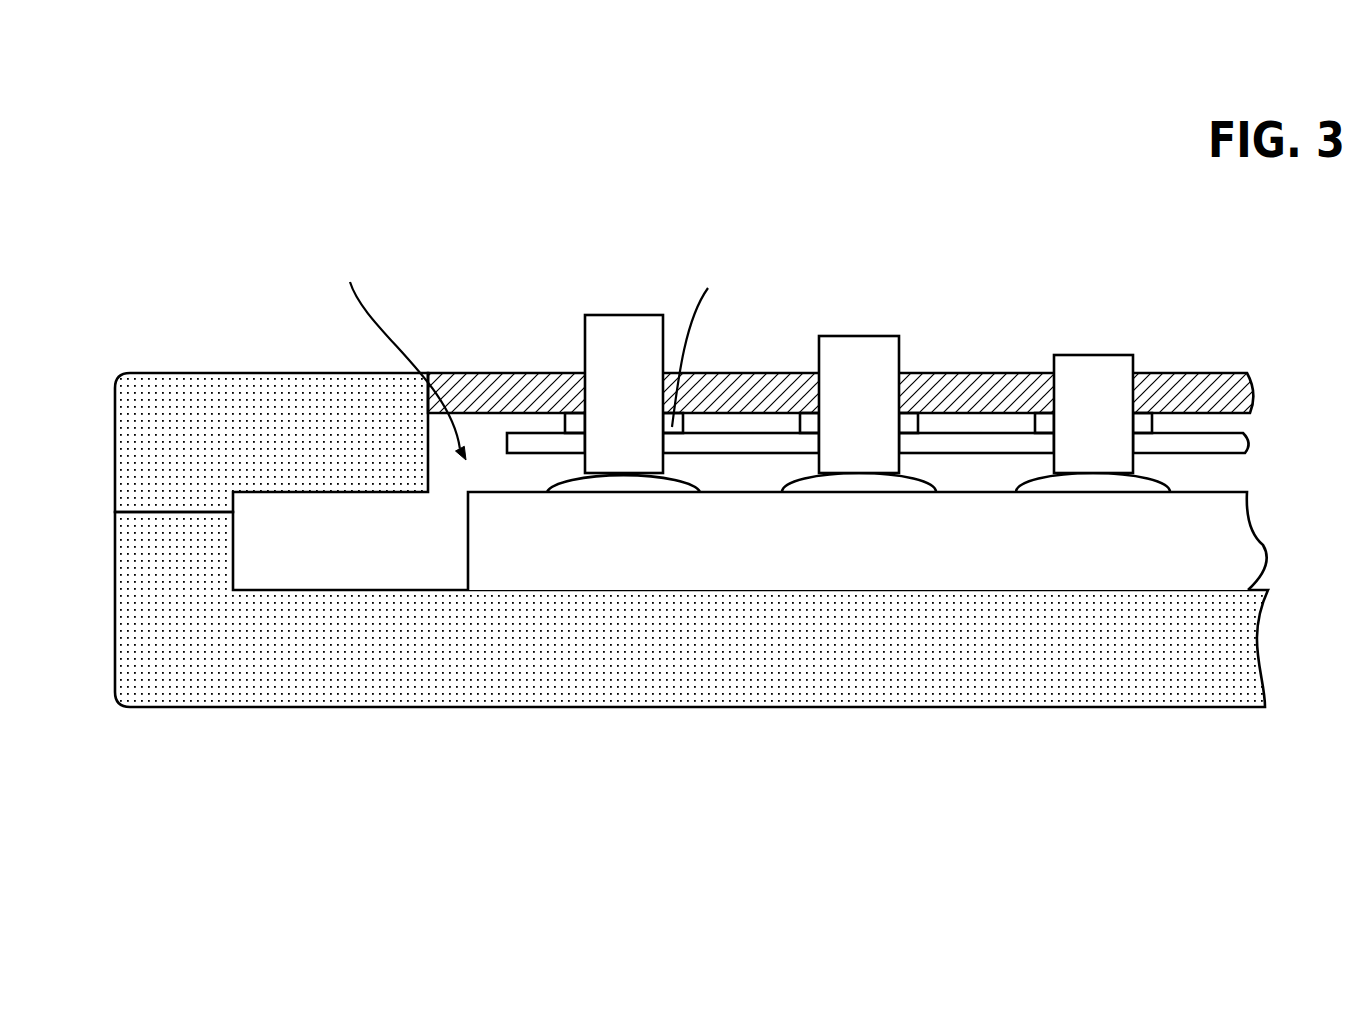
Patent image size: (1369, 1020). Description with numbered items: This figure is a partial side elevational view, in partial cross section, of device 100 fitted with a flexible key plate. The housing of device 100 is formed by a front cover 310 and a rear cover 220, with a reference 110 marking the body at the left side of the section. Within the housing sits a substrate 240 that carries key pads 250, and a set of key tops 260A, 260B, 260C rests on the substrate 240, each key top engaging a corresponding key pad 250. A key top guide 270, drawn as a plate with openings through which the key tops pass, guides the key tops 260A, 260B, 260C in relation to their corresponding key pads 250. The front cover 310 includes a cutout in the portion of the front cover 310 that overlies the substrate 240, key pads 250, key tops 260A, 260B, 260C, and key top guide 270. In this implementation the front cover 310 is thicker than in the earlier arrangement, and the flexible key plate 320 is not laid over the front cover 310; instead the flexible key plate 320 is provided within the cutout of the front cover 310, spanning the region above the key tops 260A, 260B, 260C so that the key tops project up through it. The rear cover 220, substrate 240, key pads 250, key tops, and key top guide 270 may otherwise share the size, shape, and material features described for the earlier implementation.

The device 100 is at (222, 117).
The housing 110 is at (115, 543).
The rear cover 220 is at (1102, 677).
The substrate 240 is at (1247, 542).
The key pads 250 is at (1092, 482).
The key top 260A is at (622, 375).
The key top 260B is at (858, 380).
The key top 260C is at (1097, 377).
The key top guide 270 is at (1243, 440).
The front cover 310 is at (192, 413).
The flexible key plate 320 is at (503, 398).